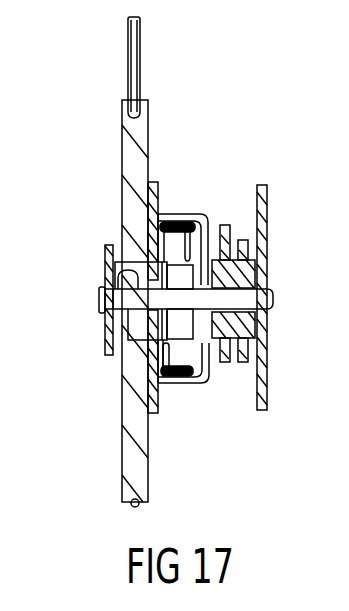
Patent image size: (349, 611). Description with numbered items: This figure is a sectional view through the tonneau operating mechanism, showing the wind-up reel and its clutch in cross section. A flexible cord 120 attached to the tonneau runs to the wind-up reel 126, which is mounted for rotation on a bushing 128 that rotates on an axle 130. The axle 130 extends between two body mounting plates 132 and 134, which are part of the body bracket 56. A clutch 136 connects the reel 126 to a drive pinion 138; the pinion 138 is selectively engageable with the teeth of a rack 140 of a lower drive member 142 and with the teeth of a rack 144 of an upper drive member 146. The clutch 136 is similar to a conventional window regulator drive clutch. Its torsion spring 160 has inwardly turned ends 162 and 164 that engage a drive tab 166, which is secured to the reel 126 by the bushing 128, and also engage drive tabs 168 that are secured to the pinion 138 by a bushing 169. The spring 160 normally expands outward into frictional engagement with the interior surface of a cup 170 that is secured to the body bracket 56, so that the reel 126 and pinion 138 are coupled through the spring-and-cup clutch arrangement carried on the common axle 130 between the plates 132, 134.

The flexible cord 120 is at (128, 42).
The wind-up reel 126 is at (128, 118).
The body bracket 56 is at (145, 408).
The body mounting plate 132 is at (105, 253).
The bushing 128 is at (128, 312).
The axle 130 is at (243, 300).
The drive tab 166 is at (160, 262).
The torsion spring 160 is at (162, 212).
The inwardly turned end 162 is at (165, 238).
The cup 170 is at (203, 220).
The inwardly turned end 164 is at (150, 372).
The drive tab 168 is at (185, 378).
The drive pinion 138 is at (245, 273).
The bushing 169 is at (248, 320).
The lower drive member 142 is at (227, 225).
The rack 144 is at (243, 240).
The rack 140 is at (226, 362).
The upper drive member 146 is at (243, 362).
The body mounting plate 134 is at (265, 190).
The clutch 136 is at (208, 100).